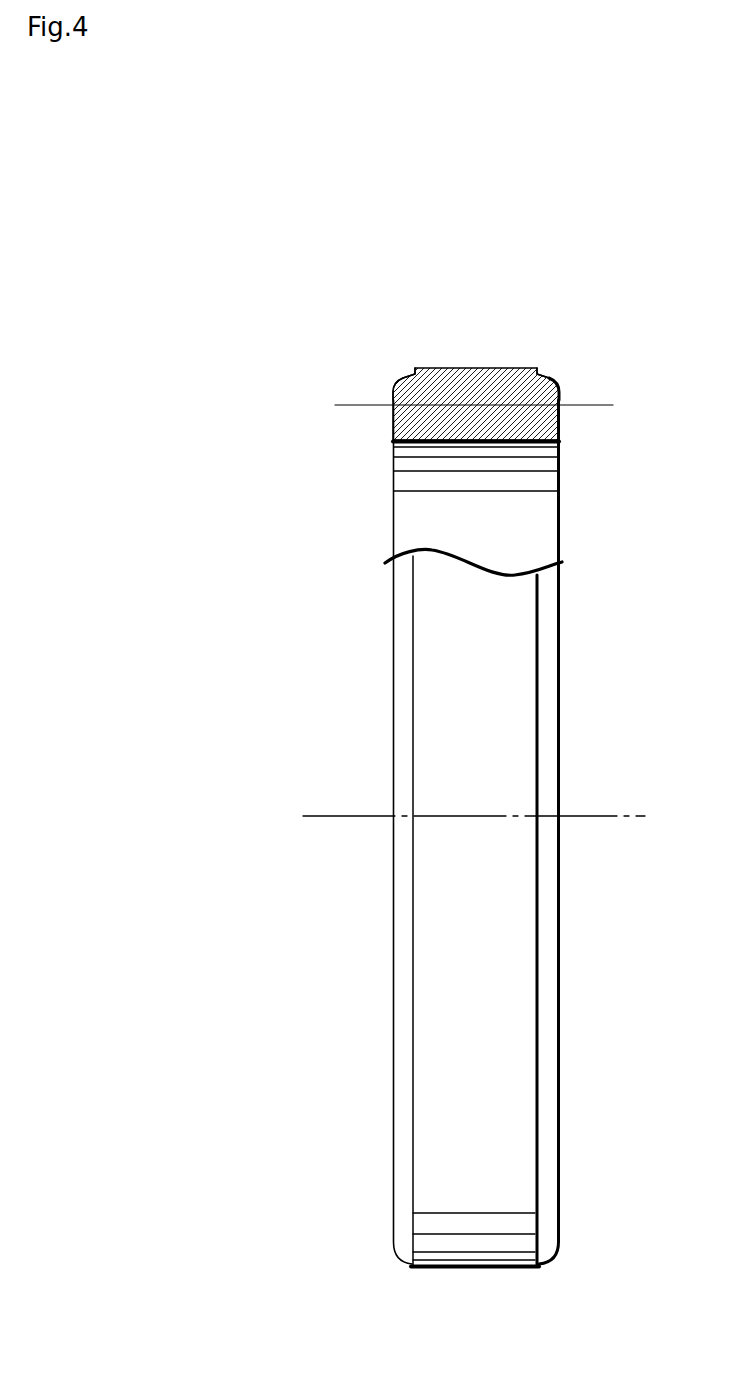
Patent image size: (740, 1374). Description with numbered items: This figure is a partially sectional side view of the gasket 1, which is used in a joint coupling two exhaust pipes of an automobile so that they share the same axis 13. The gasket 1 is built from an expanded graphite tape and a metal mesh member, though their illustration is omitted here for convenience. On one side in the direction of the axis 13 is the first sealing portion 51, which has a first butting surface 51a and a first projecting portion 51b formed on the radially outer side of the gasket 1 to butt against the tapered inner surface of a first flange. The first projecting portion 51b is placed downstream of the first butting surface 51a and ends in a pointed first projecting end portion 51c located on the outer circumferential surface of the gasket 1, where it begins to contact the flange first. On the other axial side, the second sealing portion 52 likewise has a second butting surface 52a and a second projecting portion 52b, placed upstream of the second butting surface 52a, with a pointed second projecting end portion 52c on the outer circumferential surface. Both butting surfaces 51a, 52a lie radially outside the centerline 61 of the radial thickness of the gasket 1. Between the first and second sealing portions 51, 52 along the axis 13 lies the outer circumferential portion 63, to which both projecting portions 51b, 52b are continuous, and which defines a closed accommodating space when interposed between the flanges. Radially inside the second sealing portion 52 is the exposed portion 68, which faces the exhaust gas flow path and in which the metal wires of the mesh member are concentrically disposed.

The gasket 1 is at (453, 265).
The axis 13 is at (350, 815).
The first sealing portion 51 is at (392, 628).
The first butting surface 51a is at (408, 374).
The first projecting portion 51b is at (413, 990).
The first projecting end portion 51c is at (413, 368).
The second sealing portion 52 is at (560, 628).
The second butting surface 52a is at (547, 374).
The second projecting portion 52b is at (537, 990).
The second projecting end portion 52c is at (538, 368).
The centerline 61 is at (375, 407).
The outer circumferential portion 63 is at (460, 1270).
The exposed portion 68 is at (562, 433).